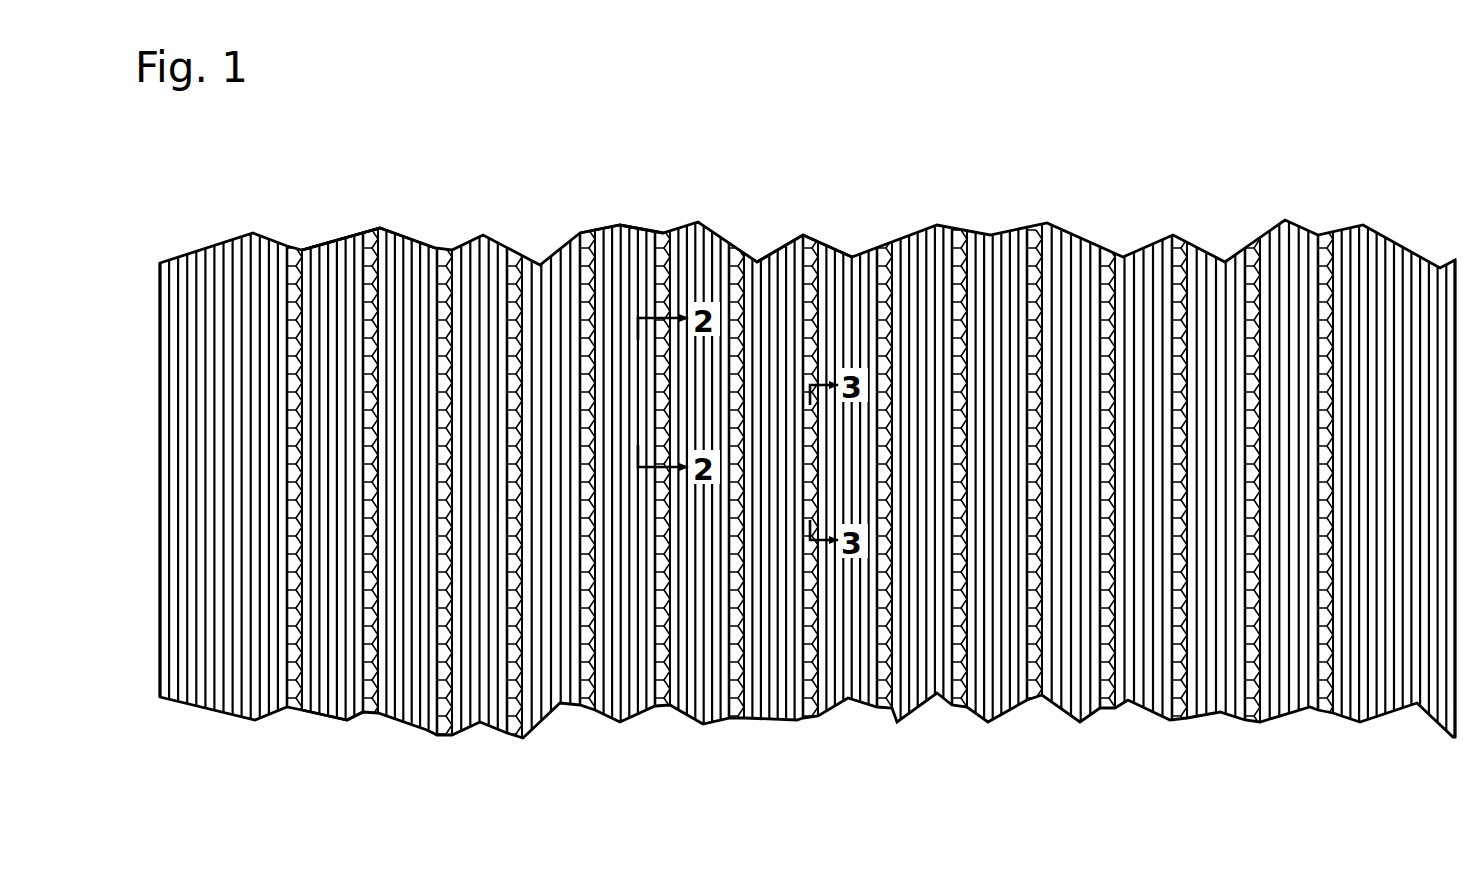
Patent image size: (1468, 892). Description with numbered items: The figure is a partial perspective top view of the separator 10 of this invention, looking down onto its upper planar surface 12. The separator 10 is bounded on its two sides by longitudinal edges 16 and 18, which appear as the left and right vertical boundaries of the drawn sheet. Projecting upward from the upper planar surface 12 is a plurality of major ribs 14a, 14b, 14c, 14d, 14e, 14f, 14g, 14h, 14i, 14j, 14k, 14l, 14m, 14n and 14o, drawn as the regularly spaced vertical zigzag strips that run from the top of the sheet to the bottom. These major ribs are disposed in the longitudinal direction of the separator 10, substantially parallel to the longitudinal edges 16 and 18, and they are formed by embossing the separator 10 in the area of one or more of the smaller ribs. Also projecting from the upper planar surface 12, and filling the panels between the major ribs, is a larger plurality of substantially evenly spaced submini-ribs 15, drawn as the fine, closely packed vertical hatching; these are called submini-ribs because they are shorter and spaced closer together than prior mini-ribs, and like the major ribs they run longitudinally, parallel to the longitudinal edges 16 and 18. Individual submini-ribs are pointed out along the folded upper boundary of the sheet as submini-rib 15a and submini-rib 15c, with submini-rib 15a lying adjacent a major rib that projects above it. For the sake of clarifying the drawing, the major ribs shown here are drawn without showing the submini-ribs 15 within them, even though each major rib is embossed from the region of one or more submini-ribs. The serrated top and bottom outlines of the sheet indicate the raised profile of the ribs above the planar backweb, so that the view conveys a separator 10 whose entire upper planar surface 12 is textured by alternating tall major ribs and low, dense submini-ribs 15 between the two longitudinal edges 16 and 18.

The separator 10 is at (243, 188).
The upper planar surface 12 is at (332, 692).
The major rib 14a is at (296, 700).
The major rib 14b is at (372, 705).
The major rib 14c is at (445, 708).
The major rib 14d is at (515, 708).
The major rib 14e is at (587, 692).
The major rib 14f is at (662, 692).
The major rib 14g is at (736, 697).
The major rib 14h is at (810, 697).
The major rib 14i is at (882, 697).
The major rib 14j is at (957, 697).
The major rib 14k is at (1032, 697).
The major rib 14l is at (1106, 697).
The major rib 14m is at (1180, 697).
The major rib 14n is at (1254, 697).
The major rib 14o is at (1327, 697).
The submini-ribs 15 is at (396, 233).
The submini-rib 15a is at (633, 229).
The submini-rib 15c is at (828, 246).
The longitudinal edge 16 is at (149, 282).
The longitudinal edge 18 is at (1448, 688).